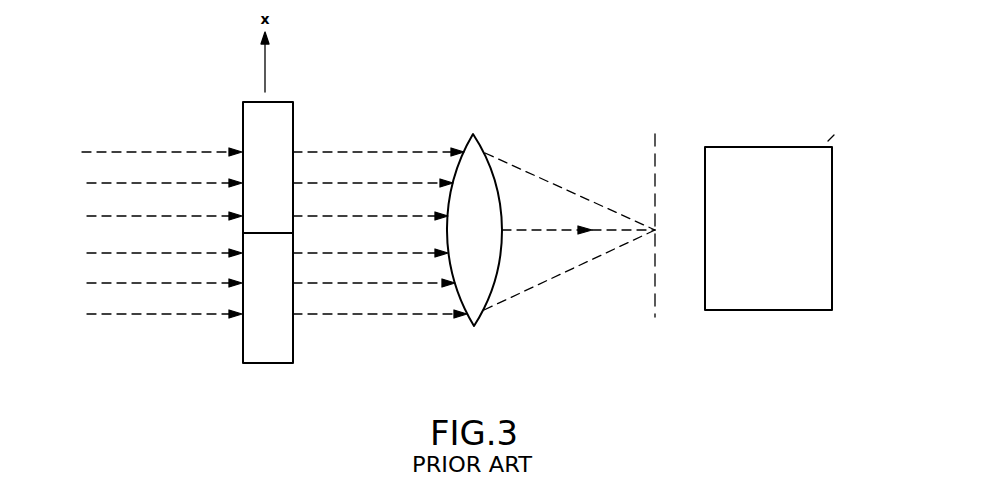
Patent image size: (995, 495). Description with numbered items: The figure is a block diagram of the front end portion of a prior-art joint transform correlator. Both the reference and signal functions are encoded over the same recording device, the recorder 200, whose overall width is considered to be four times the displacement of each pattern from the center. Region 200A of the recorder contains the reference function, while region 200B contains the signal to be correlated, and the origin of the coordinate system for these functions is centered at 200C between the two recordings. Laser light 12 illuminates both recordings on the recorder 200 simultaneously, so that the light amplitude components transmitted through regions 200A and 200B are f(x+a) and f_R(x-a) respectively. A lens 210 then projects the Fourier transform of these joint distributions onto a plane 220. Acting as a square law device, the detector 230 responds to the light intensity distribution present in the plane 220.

The laser light 12 is at (162, 233).
The recorder 200 is at (242, 249).
The region 200A is at (288, 333).
The region 200B is at (283, 118).
The center 200C is at (314, 236).
The lens 210 is at (470, 143).
The plane 220 is at (655, 315).
The detector 230 is at (808, 293).